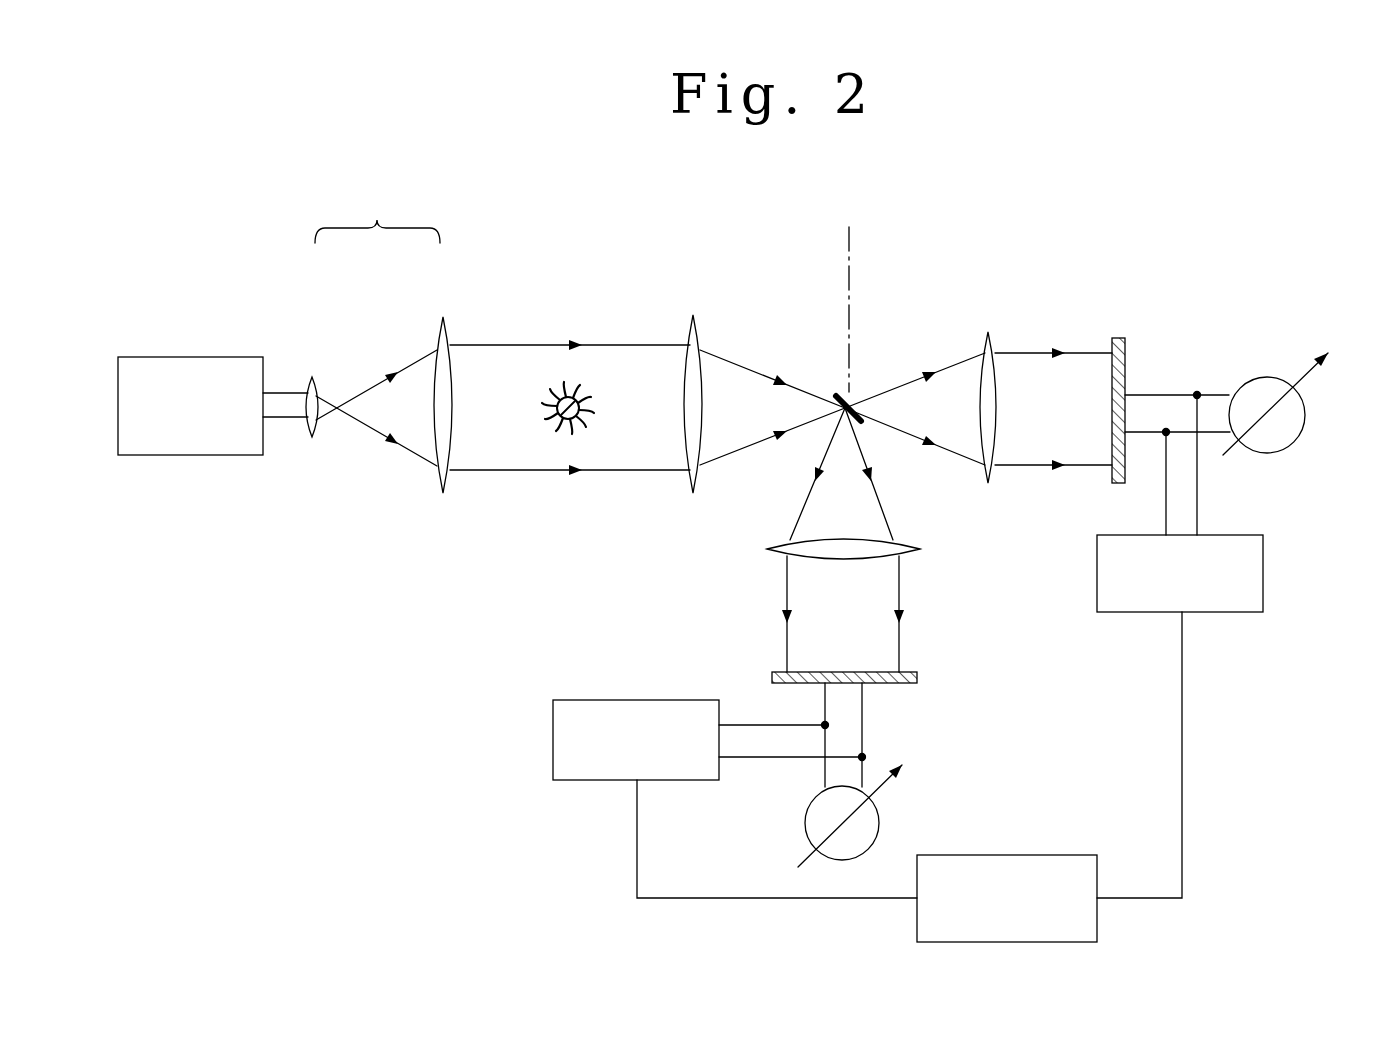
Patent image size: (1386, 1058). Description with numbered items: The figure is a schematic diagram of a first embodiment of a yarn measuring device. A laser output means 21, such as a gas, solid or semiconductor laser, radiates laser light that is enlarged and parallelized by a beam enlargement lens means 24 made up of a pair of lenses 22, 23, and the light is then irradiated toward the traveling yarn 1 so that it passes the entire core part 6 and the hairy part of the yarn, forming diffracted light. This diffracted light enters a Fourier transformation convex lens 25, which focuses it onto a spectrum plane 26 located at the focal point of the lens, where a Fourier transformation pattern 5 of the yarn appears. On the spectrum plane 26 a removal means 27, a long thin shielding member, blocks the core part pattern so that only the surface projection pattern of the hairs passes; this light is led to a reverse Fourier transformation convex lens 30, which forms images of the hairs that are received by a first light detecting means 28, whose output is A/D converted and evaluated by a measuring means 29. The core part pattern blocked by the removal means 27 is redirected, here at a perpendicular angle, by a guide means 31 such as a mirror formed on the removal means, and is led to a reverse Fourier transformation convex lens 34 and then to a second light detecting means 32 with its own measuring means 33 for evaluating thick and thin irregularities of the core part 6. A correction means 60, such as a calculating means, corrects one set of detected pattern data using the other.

The traveling yarn 1 is at (571, 406).
The Fourier transformation pattern 5 is at (558, 404).
The core part 6 is at (584, 418).
The laser output means 21 is at (185, 450).
The lens 22 is at (315, 378).
The lens 23 is at (441, 322).
The beam enlargement lens means 24 is at (377, 206).
The Fourier transformation convex lens 25 is at (700, 330).
The spectrum plane 26 is at (847, 290).
The removal means 27 is at (901, 367).
The guide means 31 is at (856, 402).
The first light detecting means 28 is at (1197, 352).
The measuring means 29 is at (1252, 578).
The reverse Fourier transformation convex lens 30 is at (990, 335).
The second light detecting means 32 is at (908, 727).
The measuring means 33 is at (613, 712).
The reverse Fourier transformation convex lens 34 is at (772, 547).
The correction means 60 is at (1003, 865).